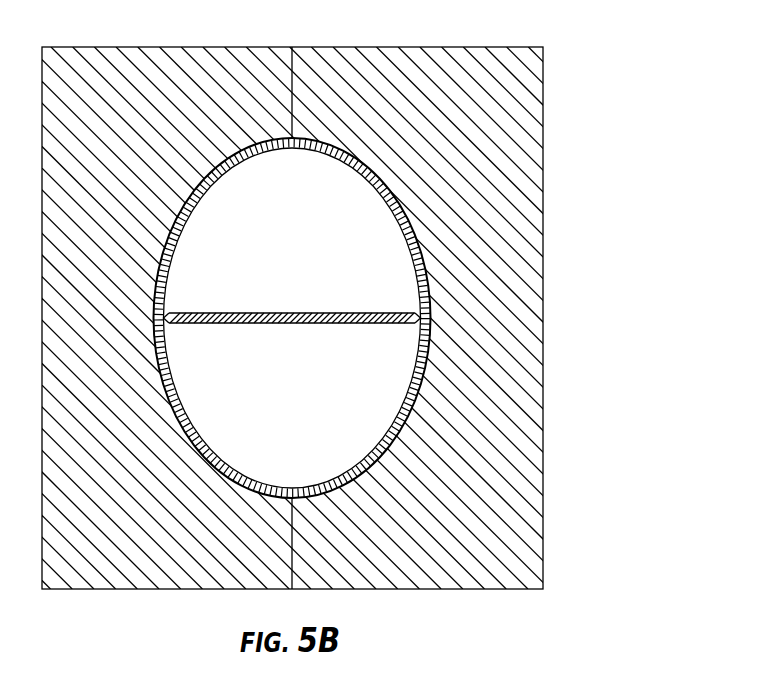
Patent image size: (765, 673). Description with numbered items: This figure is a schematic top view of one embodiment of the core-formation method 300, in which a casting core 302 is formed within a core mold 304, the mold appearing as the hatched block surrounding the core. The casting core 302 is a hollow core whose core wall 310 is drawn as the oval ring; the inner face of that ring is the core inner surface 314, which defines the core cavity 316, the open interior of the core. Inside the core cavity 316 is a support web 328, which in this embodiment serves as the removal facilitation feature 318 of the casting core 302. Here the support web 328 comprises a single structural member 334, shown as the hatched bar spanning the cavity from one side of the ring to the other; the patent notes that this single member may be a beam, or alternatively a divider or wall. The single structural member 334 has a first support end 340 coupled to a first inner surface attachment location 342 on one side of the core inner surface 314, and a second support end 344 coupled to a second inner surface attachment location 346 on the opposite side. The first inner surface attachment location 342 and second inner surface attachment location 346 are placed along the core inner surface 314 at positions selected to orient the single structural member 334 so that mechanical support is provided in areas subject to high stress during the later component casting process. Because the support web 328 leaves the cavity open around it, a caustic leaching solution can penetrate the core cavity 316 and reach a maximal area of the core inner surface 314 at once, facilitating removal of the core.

The core-formation method 300 is at (382, 297).
The casting core 302 is at (309, 289).
The core mold 304 is at (518, 97).
The core wall 310 is at (309, 318).
The core inner surface 314 is at (309, 318).
The core cavity 316 is at (336, 209).
The removal facilitation feature 318 is at (292, 364).
The support web 328 is at (250, 326).
The single structural member 334 is at (292, 364).
The first support end 340 is at (419, 326).
The first inner surface attachment location 342 is at (387, 310).
The second support end 344 is at (167, 326).
The second inner surface attachment location 346 is at (192, 310).